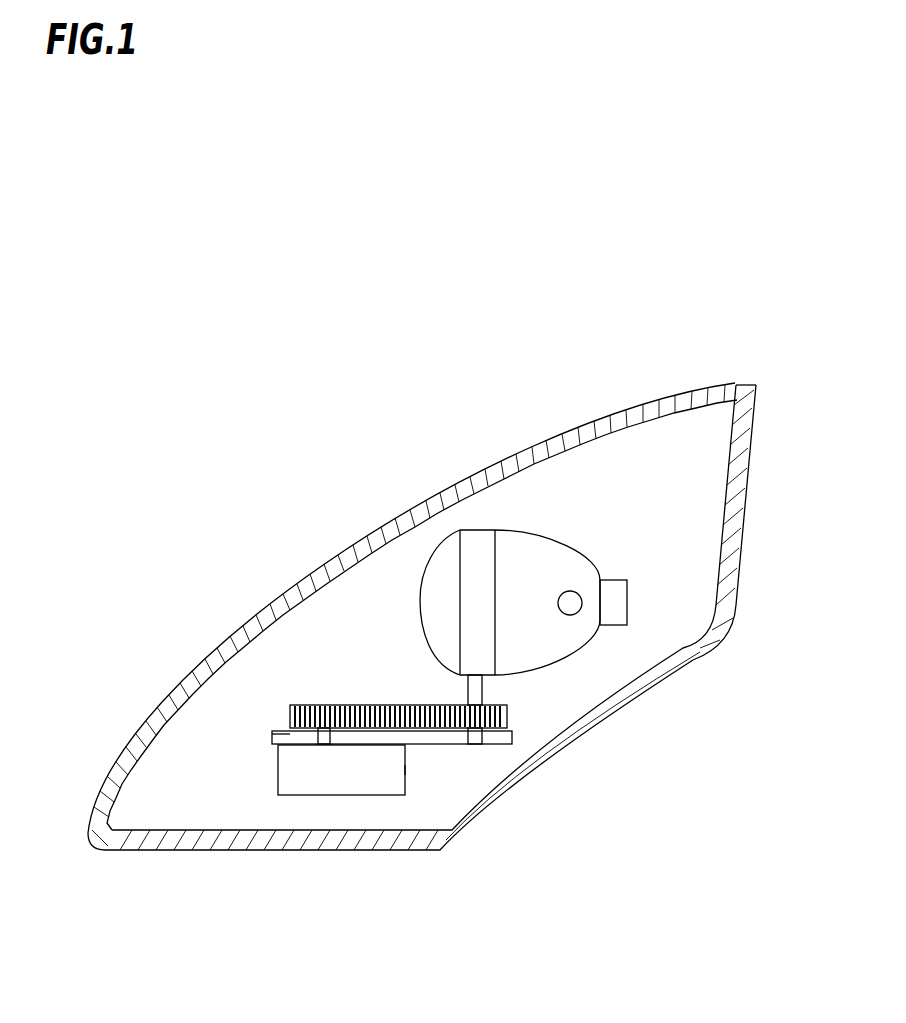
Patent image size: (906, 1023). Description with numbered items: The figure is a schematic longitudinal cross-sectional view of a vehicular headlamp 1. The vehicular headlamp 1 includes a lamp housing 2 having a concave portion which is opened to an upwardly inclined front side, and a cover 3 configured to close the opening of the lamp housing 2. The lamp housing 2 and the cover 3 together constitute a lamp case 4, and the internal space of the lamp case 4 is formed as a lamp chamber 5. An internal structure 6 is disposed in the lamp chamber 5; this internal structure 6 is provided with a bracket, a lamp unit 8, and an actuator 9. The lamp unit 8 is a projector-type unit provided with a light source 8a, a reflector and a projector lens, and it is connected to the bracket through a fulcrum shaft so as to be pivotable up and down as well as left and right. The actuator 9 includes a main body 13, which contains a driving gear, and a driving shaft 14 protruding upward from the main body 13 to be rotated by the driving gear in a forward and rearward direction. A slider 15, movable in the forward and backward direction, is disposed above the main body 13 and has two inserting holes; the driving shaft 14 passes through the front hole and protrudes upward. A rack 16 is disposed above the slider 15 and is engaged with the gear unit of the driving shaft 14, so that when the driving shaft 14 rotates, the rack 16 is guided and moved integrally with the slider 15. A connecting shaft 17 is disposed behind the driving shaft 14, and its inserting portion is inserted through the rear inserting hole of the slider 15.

The vehicular headlamp 1 is at (186, 523).
The lamp housing 2 is at (750, 427).
The cover 3 is at (657, 405).
The lamp case 4 is at (753, 338).
The lamp chamber 5 is at (678, 475).
The internal structure 6 is at (378, 577).
The lamp unit 8 is at (497, 540).
The light source 8a is at (571, 591).
The actuator 9 is at (405, 770).
The main body 13 is at (348, 795).
The driving shaft 14 is at (272, 742).
The slider 15 is at (280, 733).
The rack 16 is at (357, 704).
The connecting shaft 17 is at (483, 688).